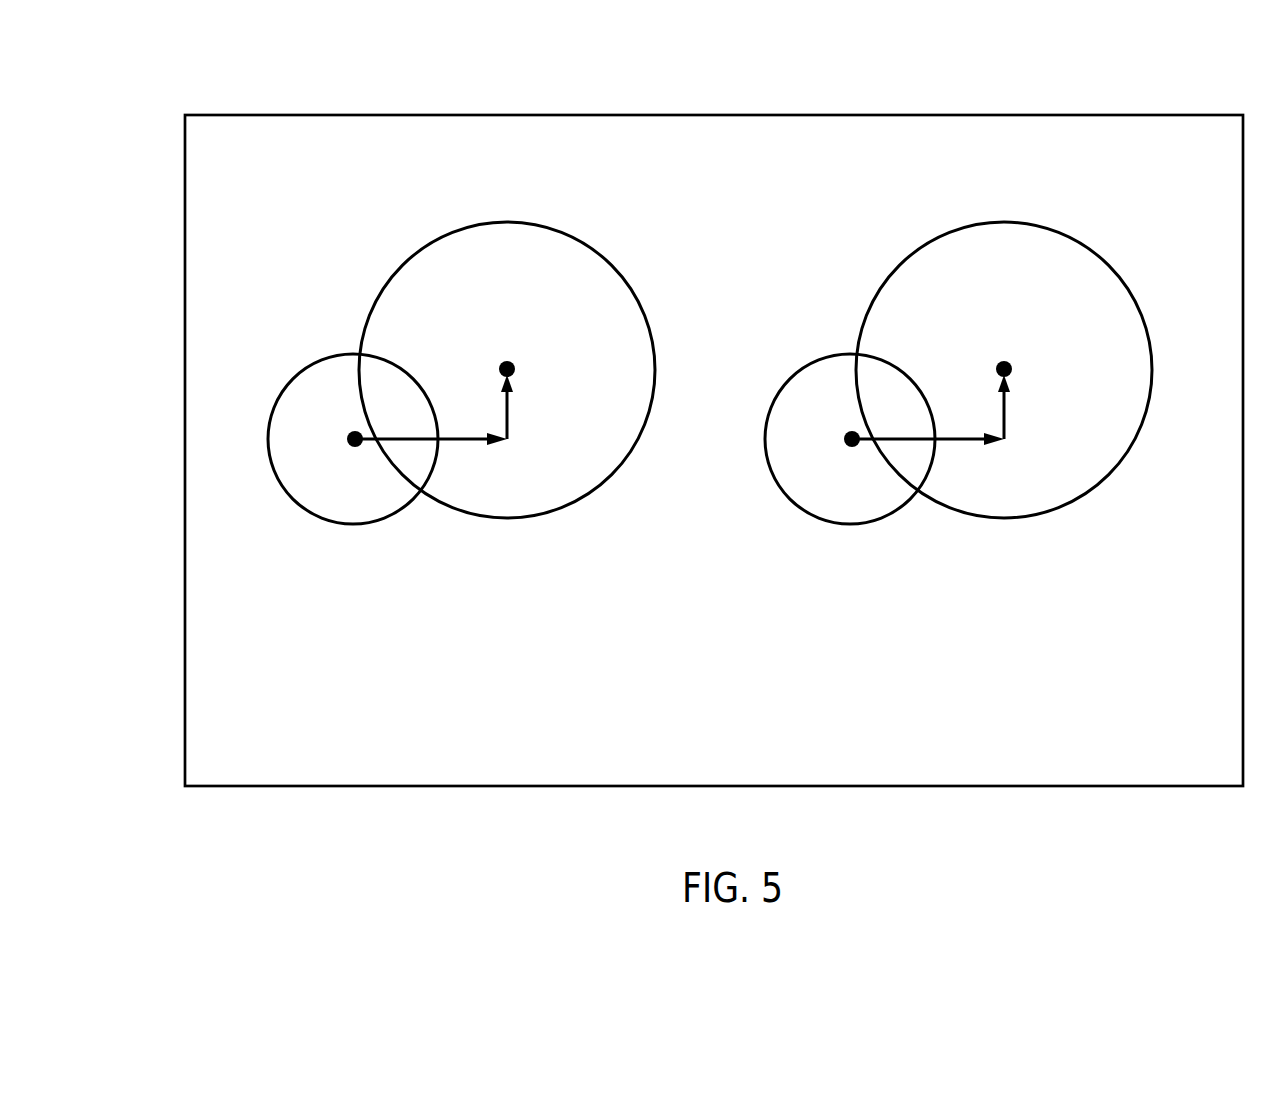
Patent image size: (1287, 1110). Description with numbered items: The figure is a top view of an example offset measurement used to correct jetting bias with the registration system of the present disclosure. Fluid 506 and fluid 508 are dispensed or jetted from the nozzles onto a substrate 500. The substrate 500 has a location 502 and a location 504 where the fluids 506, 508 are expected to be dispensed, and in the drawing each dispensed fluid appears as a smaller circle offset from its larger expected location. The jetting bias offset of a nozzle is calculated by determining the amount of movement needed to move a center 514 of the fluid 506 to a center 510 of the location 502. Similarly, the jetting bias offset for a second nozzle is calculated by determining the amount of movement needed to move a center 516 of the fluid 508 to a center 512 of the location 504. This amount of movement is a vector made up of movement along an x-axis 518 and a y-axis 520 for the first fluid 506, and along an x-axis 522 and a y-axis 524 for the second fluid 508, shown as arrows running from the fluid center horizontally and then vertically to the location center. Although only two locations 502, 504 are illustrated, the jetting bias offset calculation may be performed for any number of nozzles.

The substrate 500 is at (113, 47).
The location 502 is at (573, 235).
The location 504 is at (1004, 366).
The fluid 506 is at (335, 353).
The fluid 508 is at (845, 426).
The center of the location 510 is at (507, 369).
The center of the location 512 is at (1103, 330).
The center of the fluid 514 is at (355, 439).
The center of the fluid 516 is at (802, 478).
The x-axis 518 is at (460, 440).
The y-axis 520 is at (507, 418).
The x-axis 522 is at (928, 508).
The y-axis 524 is at (1099, 396).